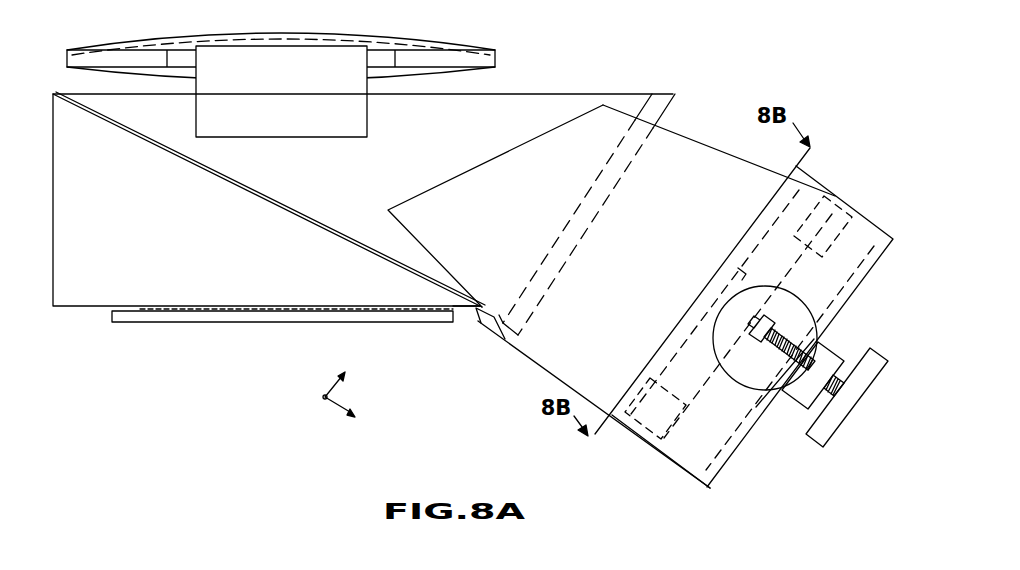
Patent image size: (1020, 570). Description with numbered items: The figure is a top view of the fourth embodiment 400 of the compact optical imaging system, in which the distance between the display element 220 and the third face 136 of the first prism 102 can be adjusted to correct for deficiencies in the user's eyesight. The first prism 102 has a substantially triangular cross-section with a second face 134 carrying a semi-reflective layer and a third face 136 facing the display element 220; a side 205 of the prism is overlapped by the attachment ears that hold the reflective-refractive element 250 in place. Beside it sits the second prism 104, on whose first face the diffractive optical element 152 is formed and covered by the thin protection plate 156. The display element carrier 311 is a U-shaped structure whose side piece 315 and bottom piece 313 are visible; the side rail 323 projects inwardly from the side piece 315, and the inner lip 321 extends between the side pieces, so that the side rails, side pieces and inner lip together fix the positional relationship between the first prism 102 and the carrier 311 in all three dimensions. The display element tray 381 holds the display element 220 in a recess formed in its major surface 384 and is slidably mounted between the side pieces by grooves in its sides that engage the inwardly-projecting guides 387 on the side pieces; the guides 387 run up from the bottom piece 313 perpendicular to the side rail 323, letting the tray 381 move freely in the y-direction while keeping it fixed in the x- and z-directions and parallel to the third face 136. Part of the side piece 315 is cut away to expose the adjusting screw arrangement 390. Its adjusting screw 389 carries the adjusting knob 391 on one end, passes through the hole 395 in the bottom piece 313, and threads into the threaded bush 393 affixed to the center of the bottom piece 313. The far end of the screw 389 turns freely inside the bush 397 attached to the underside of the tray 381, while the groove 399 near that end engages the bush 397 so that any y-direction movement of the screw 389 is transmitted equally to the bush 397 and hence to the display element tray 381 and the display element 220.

The first prism 102 is at (591, 96).
The second prism 104 is at (62, 310).
The second face 134 is at (456, 312).
The third face 136 is at (676, 97).
The diffractive optical element 152 is at (213, 312).
The protection plate 156 is at (150, 313).
The side 205 is at (523, 107).
The display element 220 is at (805, 203).
The reflective-refractive element 250 is at (497, 57).
The display element carrier 311 is at (697, 143).
The bottom piece 313 is at (727, 467).
The side piece 315 is at (541, 366).
The inner lip 321 is at (483, 327).
The side rail 323 is at (505, 342).
The display element tray 381 is at (818, 187).
The major surface 384 is at (742, 276).
The guide 387 is at (827, 255).
The adjusting screw 389 is at (826, 398).
The adjusting screw arrangement 390 is at (836, 433).
The adjusting knob 391 is at (845, 421).
The threaded bush 393 is at (822, 346).
The hole 395 is at (826, 328).
The bush 397 is at (716, 330).
The groove 399 is at (764, 318).
The fourth embodiment 400 is at (312, 332).